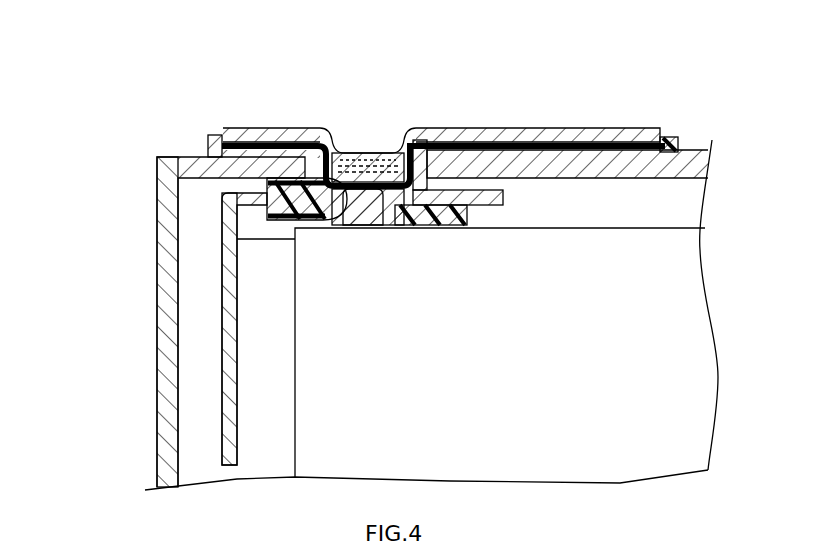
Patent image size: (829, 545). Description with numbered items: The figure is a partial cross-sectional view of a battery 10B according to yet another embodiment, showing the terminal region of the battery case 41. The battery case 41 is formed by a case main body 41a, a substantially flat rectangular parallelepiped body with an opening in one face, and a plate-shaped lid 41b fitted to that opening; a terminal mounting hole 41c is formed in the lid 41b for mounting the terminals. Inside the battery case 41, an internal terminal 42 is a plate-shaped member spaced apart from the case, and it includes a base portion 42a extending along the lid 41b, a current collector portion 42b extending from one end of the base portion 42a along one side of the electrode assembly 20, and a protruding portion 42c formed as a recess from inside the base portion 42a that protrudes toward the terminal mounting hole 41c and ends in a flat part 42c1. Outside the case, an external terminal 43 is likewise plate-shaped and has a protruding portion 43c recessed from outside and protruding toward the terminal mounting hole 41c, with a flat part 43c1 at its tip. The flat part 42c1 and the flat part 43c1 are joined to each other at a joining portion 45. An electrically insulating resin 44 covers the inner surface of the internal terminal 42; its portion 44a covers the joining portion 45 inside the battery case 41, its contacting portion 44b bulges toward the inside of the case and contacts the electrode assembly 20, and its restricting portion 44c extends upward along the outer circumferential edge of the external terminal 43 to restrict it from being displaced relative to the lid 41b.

The battery 10B is at (538, 72).
The electrode assembly 20 is at (668, 226).
The battery case 41 is at (153, 187).
The case main body 41a is at (156, 323).
The lid 41b is at (690, 155).
The terminal mounting hole 41c is at (416, 160).
The internal terminal 42 is at (213, 257).
The base portion 42a is at (488, 208).
The current collector portion 42b is at (223, 362).
The protruding portion 42c is at (347, 200).
The flat part 42c1 is at (377, 157).
The external terminal 43 is at (578, 128).
The protruding portion 43c is at (352, 150).
The flat part 43c1 is at (402, 213).
The electrically insulating resin 44 is at (212, 128).
The portion covering the joining portion 44a is at (372, 208).
The contacting portion 44b is at (433, 227).
The restricting portion 44c is at (668, 137).
The joining portion 45 is at (387, 157).